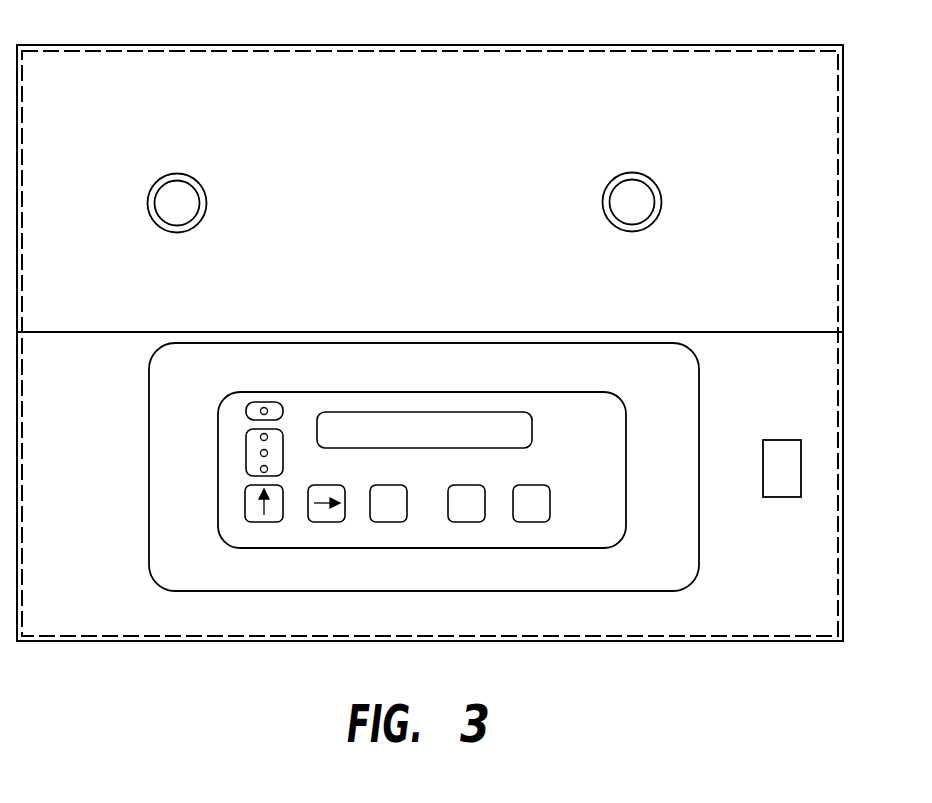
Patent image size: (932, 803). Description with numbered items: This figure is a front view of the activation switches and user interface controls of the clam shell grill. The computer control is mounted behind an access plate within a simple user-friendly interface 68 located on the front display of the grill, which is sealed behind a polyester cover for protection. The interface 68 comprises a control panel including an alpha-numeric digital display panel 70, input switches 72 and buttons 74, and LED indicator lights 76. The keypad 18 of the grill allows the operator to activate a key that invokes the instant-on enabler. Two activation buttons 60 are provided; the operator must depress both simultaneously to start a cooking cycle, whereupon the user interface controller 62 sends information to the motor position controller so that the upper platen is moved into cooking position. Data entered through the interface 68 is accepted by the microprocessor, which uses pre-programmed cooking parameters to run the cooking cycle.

The keypad 18 is at (667, 552).
The activation buttons 60 is at (182, 173).
The user interface controller 62 is at (289, 593).
The user-friendly interface 68 is at (817, 265).
The alpha-numeric digital display panel 70 is at (518, 428).
The input switches 72 is at (783, 472).
The buttons 74 is at (467, 522).
The LED indicator lights 76 is at (246, 453).